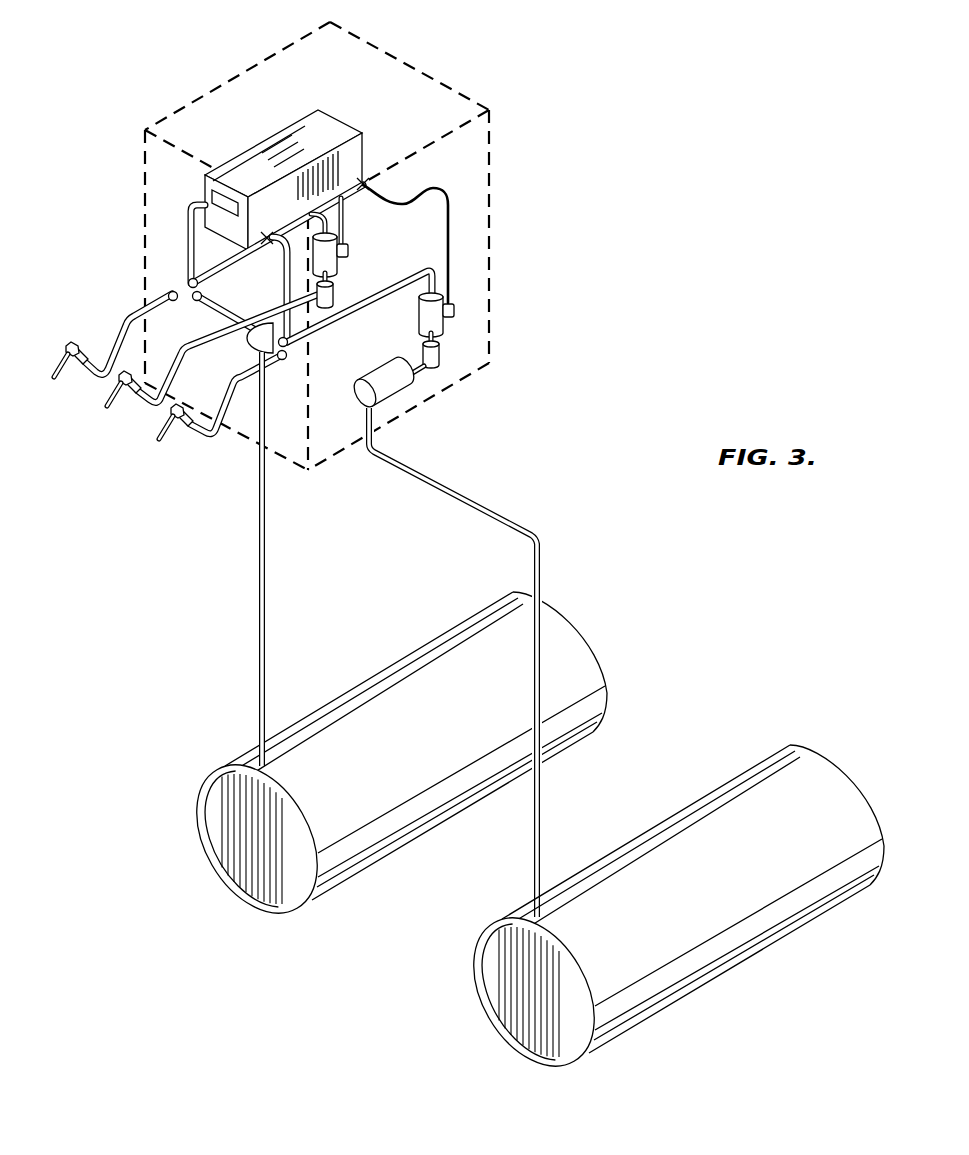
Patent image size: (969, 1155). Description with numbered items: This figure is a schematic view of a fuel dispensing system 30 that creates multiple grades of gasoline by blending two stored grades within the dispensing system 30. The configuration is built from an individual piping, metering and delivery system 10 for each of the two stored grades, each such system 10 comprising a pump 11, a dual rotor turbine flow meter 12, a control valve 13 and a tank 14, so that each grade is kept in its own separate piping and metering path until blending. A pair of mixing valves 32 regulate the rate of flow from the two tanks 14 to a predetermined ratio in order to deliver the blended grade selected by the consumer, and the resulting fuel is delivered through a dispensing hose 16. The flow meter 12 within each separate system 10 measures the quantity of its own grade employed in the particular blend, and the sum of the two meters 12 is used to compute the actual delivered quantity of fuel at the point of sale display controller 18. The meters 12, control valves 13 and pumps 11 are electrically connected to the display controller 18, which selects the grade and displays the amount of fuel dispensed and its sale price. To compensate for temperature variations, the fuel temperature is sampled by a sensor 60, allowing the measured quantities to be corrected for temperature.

The piping, metering and delivery system 10 is at (260, 515).
The pump 11 is at (405, 402).
The dual rotor turbine flow meter 12 is at (339, 268).
The control valve 13 is at (442, 358).
The tank 14 is at (516, 721).
The dispensing hose 16 is at (140, 393).
The point of sale display controller 18 is at (330, 127).
The dispensing system 30 is at (258, 147).
The mixing valve 32 is at (180, 286).
The sensor 60 is at (453, 310).